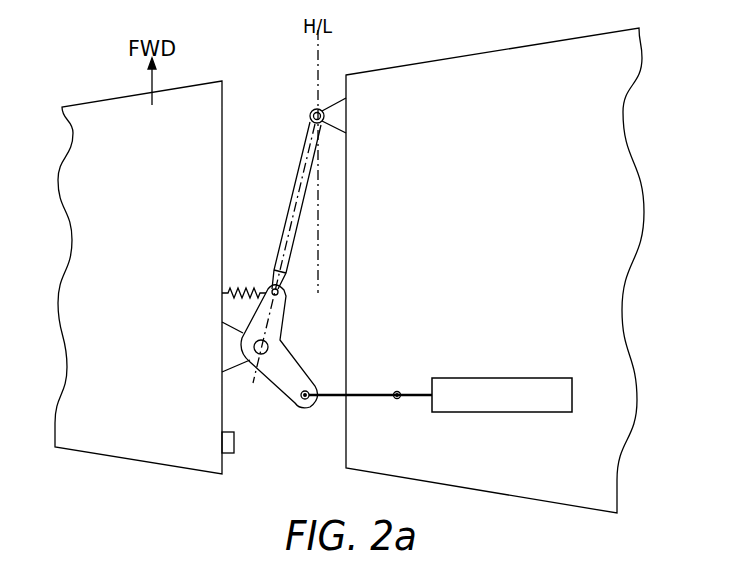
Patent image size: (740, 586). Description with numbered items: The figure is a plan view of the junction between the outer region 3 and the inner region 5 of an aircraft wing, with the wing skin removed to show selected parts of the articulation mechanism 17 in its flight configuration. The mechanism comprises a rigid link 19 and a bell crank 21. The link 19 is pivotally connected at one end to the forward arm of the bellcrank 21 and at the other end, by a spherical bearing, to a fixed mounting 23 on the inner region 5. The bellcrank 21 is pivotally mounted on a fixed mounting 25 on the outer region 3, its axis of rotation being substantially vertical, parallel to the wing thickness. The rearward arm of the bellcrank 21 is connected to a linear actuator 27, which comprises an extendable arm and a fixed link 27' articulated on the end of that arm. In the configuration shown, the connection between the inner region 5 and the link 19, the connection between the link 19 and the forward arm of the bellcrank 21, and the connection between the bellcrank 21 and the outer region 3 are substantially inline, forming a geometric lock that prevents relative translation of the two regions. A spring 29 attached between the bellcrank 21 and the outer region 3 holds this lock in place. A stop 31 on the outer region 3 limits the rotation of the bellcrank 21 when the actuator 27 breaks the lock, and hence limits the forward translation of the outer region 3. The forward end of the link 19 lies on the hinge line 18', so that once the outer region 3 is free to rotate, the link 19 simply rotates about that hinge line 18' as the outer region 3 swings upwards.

The outer region 3 is at (131, 203).
The inner region 5 is at (539, 203).
The articulation mechanism 17 is at (280, 108).
The hinge line 18' is at (290, 161).
The rigid link 19 is at (294, 190).
The bell crank 21 is at (283, 373).
The fixed mounting 23 is at (340, 117).
The fixed mounting 25 is at (228, 350).
The linear actuator 27 is at (502, 419).
The fixed link 27' is at (370, 421).
The spring 29 is at (245, 288).
The stop 31 is at (222, 441).